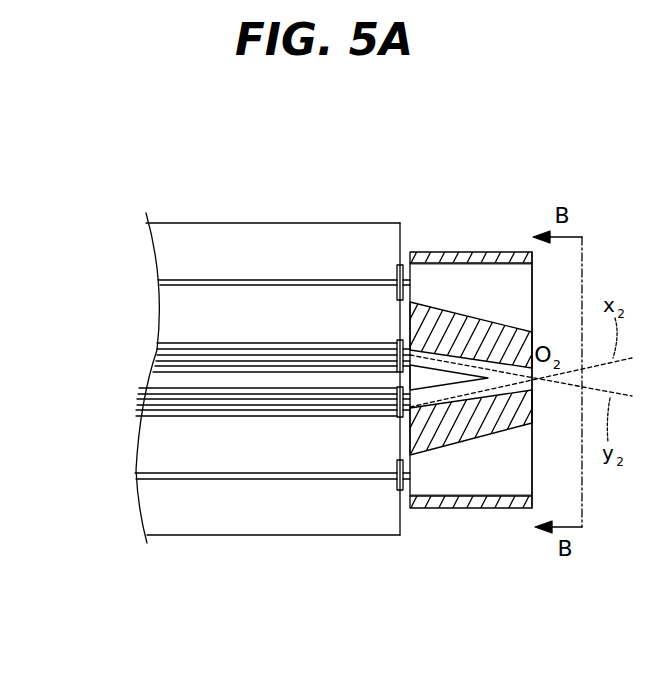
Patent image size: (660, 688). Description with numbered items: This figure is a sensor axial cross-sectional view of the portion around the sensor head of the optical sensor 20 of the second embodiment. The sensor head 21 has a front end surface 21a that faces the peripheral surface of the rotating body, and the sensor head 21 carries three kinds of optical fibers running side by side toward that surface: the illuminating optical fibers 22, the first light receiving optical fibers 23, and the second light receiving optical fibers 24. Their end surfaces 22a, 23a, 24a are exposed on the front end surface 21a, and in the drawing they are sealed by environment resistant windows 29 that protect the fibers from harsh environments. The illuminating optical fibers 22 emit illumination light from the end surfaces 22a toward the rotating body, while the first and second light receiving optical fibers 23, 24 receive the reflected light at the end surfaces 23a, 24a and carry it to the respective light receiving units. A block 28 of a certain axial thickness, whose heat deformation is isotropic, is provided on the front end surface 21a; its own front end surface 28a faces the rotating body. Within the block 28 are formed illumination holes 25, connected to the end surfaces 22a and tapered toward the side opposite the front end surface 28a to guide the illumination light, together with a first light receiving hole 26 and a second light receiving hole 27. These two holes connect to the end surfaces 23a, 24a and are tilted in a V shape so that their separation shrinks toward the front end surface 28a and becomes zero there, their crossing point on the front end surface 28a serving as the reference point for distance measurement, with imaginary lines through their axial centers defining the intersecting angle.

The optical sensor 20 is at (174, 604).
The sensor head 21 is at (272, 310).
The front end surface 21a is at (404, 235).
The illuminating optical fibers 22 is at (253, 377).
The end surfaces 22a is at (407, 280).
The first light receiving optical fibers 23 is at (264, 286).
The end surfaces 23a is at (417, 347).
The second light receiving optical fibers 24 is at (263, 472).
The end surfaces 24a is at (411, 410).
The illumination holes 25 is at (468, 283).
The first light receiving hole 26 is at (472, 358).
The second light receiving hole 27 is at (500, 392).
The block 28 is at (452, 331).
The front end surface 28a is at (532, 500).
The environment resistant windows 29 is at (397, 268).